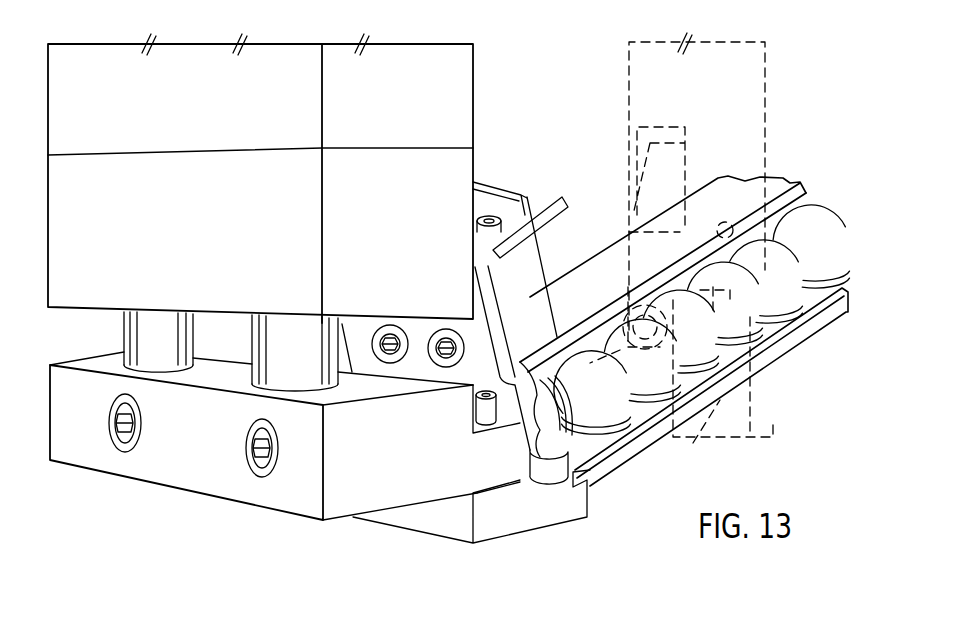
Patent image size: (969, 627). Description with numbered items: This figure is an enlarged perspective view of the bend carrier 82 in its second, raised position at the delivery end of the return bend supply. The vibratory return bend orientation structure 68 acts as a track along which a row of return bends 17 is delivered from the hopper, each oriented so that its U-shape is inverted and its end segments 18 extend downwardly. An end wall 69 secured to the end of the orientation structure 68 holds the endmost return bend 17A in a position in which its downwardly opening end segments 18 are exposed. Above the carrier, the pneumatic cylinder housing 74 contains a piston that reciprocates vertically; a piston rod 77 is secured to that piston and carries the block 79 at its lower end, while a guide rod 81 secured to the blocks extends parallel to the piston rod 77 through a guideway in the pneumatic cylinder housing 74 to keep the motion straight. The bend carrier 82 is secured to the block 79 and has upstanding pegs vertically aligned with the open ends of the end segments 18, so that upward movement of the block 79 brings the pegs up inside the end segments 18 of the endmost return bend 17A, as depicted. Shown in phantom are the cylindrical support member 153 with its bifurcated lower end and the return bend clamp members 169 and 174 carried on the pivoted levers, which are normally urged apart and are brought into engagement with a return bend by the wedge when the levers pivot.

The pneumatic cylinder housing 74 is at (260, 178).
The guide rod 81 is at (143, 338).
The piston rod 77 is at (274, 341).
The block 79 is at (190, 475).
The end wall 69 is at (416, 337).
The bend carrier 82 is at (495, 525).
The vibratory return bend orientation structure 68 is at (789, 171).
The return bends 17 is at (800, 248).
The end segments 18 is at (847, 268).
The endmost return bend 17A is at (540, 387).
The cylindrical support member 153 is at (753, 107).
The return bend clamp member 174 is at (773, 428).
The return bend clamp member 169 is at (693, 443).